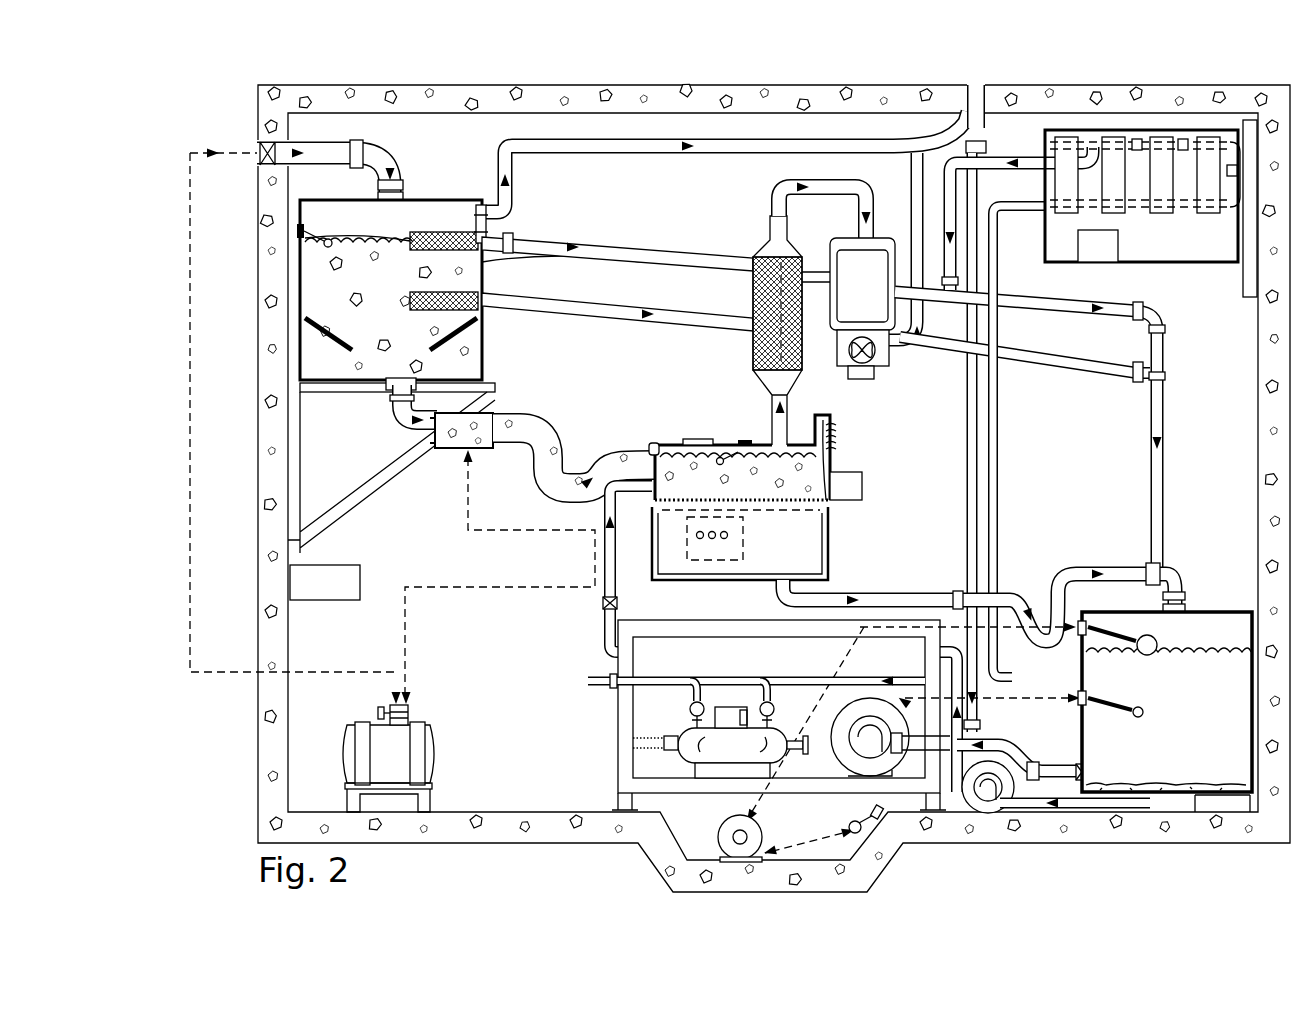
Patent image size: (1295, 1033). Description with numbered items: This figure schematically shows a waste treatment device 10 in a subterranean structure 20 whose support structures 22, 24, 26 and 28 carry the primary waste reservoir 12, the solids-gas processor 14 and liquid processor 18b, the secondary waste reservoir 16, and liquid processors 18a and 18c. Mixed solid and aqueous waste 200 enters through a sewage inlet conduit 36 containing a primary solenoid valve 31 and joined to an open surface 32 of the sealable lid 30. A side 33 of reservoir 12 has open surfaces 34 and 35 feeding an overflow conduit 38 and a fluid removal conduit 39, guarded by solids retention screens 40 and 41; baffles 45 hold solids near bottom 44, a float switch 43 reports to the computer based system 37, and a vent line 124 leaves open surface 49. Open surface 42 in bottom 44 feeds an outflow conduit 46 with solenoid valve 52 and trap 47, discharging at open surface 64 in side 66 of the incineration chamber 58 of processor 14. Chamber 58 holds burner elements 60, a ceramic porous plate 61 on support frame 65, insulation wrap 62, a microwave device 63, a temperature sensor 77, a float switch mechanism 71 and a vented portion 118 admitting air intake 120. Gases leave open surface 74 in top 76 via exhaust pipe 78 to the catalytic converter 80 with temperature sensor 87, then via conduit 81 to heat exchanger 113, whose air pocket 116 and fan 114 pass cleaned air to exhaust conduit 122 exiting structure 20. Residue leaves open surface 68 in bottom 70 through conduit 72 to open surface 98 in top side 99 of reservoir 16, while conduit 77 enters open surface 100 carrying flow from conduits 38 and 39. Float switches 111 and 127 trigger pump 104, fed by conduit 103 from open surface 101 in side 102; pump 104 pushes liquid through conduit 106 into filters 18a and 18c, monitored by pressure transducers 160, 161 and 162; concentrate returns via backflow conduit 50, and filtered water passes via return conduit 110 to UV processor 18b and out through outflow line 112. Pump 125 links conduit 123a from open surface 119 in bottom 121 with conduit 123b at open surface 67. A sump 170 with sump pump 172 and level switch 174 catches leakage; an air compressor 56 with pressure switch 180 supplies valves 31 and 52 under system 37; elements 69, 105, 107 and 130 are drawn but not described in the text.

The system 10 is at (262, 66).
The enclosure wall 20 is at (262, 113).
The inlet pipe 31 is at (268, 152).
The elbow pipe 36 is at (390, 142).
The inlet 30 is at (290, 190).
The inlet fitting 32 is at (375, 188).
The digester tank 40 is at (420, 242).
The spray nozzle 43 is at (328, 247).
The liquid 41 is at (410, 278).
The upper screen 34 is at (483, 247).
The lower screen 35 is at (483, 299).
The pipe 33 is at (490, 272).
The baffle 200 is at (345, 318).
The baffle 45 is at (345, 338).
The platform 44 is at (360, 388).
The support brace 22 is at (330, 423).
The gas pipe 124 is at (565, 130).
The fitting 49 is at (478, 212).
The gas outlet 12 is at (515, 210).
The exhaust pipe 122 is at (935, 190).
The upper pipe 38 is at (565, 240).
The lower pipe 39 is at (588, 302).
The scrubber 80 is at (756, 262).
The scrubber media 87 is at (762, 300).
The scrubber outlet pipe 81 is at (772, 195).
The scrubber drain neck 78 is at (768, 402).
The canister 116 is at (870, 250).
The blower 113 is at (960, 325).
The blower base 114 is at (874, 373).
The pipe 110 is at (1005, 300).
The pipe 107 is at (1095, 262).
The vertical pipe 77 is at (1165, 468).
The return pipe 50 is at (990, 160).
The pipe 106 is at (1000, 520).
The heat exchanger 18a is at (1108, 214).
The sensor 160 is at (1136, 139).
The sensor 161 is at (1182, 139).
The sensor 162 is at (1238, 170).
The heat exchanger unit 18c is at (1226, 225).
The panel 28 is at (1248, 300).
The drain fitting 42 is at (384, 398).
The drain pipe 46 is at (394, 412).
The grinder box 52 is at (445, 440).
The transfer pipe 47 is at (545, 490).
The upper chamber 58 is at (705, 440).
The screen 14 is at (728, 440).
The screen 61 is at (800, 509).
The lower tank 60 is at (685, 542).
The aerator 65 is at (740, 525).
The tank wall 69 is at (832, 555).
The tank bottom 70 is at (740, 580).
The tank wall 66 is at (655, 520).
The lid 76 is at (683, 445).
The float 71 is at (728, 455).
The inlet 64 is at (655, 448).
The drain pipe 74 is at (772, 450).
The inlet diffuser 118 is at (832, 432).
The box 120 is at (852, 480).
The chamber 63 is at (880, 515).
The outlet pipe 72 is at (875, 593).
The outlet 68 is at (783, 585).
The pipe 99 is at (1072, 618).
The pipe 100 is at (1085, 620).
The pipe 98 is at (1185, 600).
The supply pipe 62 is at (655, 590).
The valve 130 is at (600, 603).
The pipe 67 is at (605, 500).
The pipe 18b is at (640, 762).
The pipe 123b is at (600, 630).
The cabinet 24 is at (632, 742).
The air pipe 112 is at (640, 703).
The compressor 104 is at (790, 765).
The blower 103 is at (905, 780).
The sump pit 170 is at (660, 848).
The sump pump 172 is at (765, 835).
The float switch 174 is at (862, 835).
The pump 125 is at (980, 812).
The pipe 101 is at (1078, 764).
The valve 105 is at (1090, 770).
The control line 102 is at (1078, 683).
The pipe 123a is at (1030, 812).
The storage tank 16 is at (1240, 612).
The float switch 111 is at (1150, 652).
The float switch 127 is at (1143, 716).
The tank bottom 119 is at (1158, 815).
The support 121 is at (1187, 815).
The floor 26 is at (1248, 815).
The tank 56 is at (370, 725).
The fitting 180 is at (410, 710).
The controller 37 is at (325, 582).